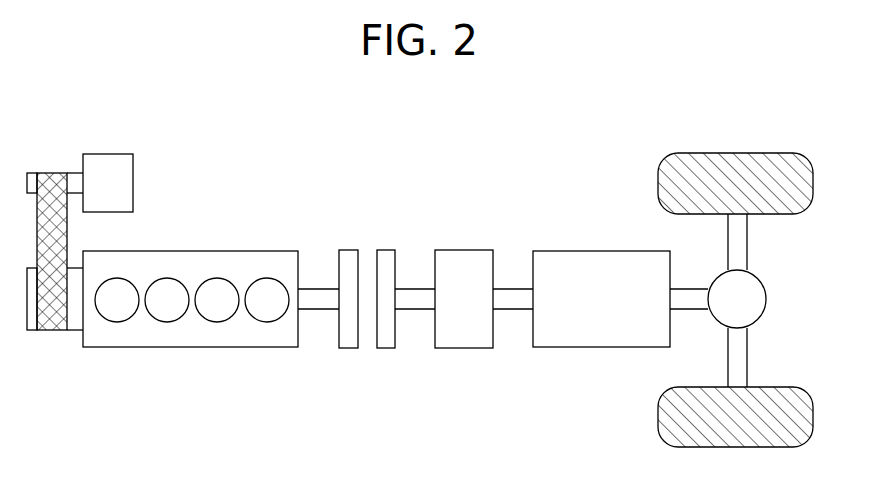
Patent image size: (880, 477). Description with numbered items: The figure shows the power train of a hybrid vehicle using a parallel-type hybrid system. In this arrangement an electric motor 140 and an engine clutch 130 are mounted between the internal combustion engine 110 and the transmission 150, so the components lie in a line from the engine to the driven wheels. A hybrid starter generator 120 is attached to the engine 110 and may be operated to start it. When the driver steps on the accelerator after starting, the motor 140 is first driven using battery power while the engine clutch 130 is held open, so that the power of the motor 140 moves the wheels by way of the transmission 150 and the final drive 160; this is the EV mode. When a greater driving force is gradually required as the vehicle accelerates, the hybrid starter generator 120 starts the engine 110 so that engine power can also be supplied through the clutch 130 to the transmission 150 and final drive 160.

The internal combustion engine 110 is at (273, 250).
The hybrid starter generator 120 is at (133, 157).
The engine clutch 130 is at (383, 249).
The electric motor 140 is at (460, 249).
The transmission 150 is at (598, 250).
The final drive 160 is at (766, 273).